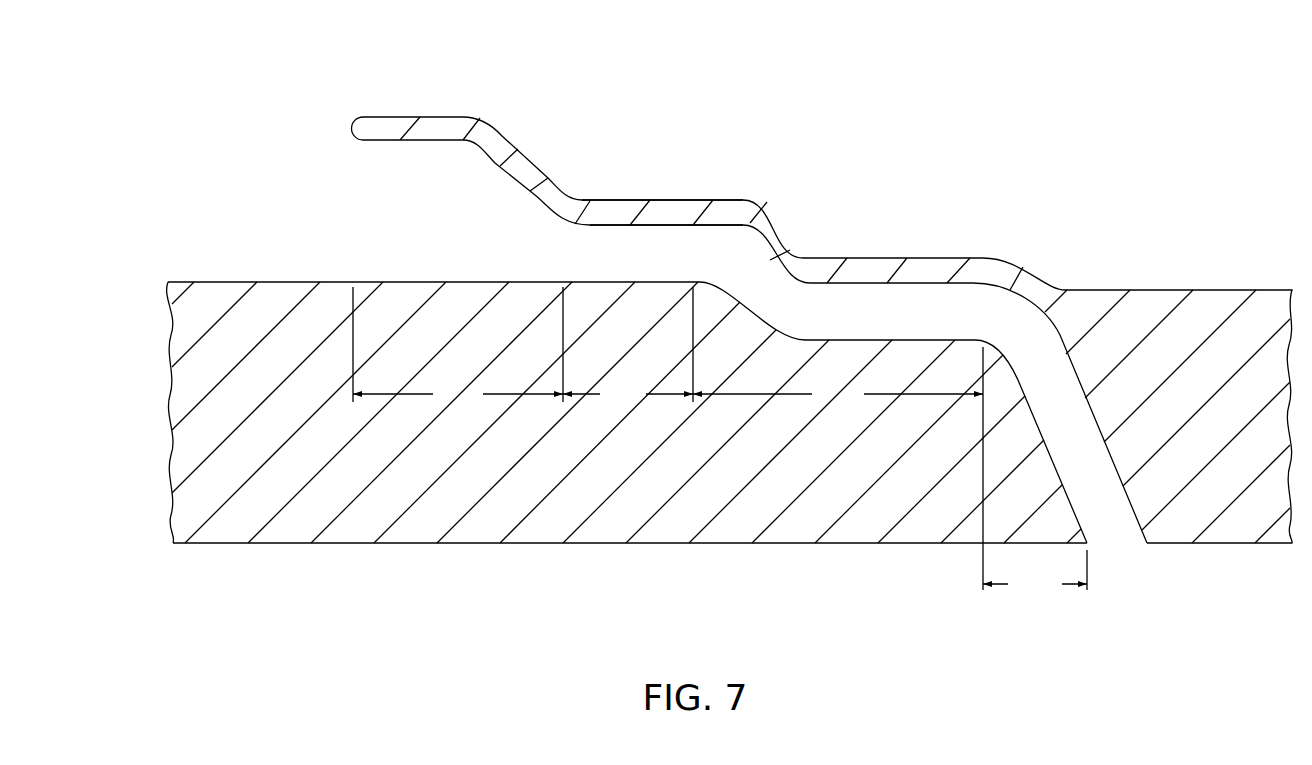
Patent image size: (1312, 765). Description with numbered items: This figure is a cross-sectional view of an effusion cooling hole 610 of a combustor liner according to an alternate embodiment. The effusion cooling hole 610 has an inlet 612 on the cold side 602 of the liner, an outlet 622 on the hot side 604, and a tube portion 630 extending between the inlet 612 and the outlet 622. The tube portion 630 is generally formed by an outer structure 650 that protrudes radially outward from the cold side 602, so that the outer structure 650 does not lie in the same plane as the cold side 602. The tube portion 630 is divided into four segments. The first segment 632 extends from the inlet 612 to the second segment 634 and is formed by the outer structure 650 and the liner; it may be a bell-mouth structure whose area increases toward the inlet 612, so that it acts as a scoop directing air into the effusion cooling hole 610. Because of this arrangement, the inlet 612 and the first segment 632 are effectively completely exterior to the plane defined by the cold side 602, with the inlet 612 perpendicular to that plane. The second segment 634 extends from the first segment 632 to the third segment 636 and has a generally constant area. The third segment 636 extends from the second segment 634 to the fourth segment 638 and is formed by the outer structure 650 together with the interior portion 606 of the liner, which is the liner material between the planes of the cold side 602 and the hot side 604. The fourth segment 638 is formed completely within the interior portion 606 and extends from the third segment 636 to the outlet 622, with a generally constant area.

The cold side 602 is at (222, 281).
The hot side 604 is at (221, 545).
The interior portion 606 is at (688, 412).
The effusion cooling hole 610 is at (721, 307).
The inlet 612 is at (372, 214).
The outlet 622 is at (1110, 546).
The tube portion 630 is at (668, 240).
The first segment 632 is at (458, 348).
The second segment 634 is at (628, 348).
The third segment 636 is at (838, 468).
The fourth segment 638 is at (1035, 574).
The outer structure 650 is at (441, 114).